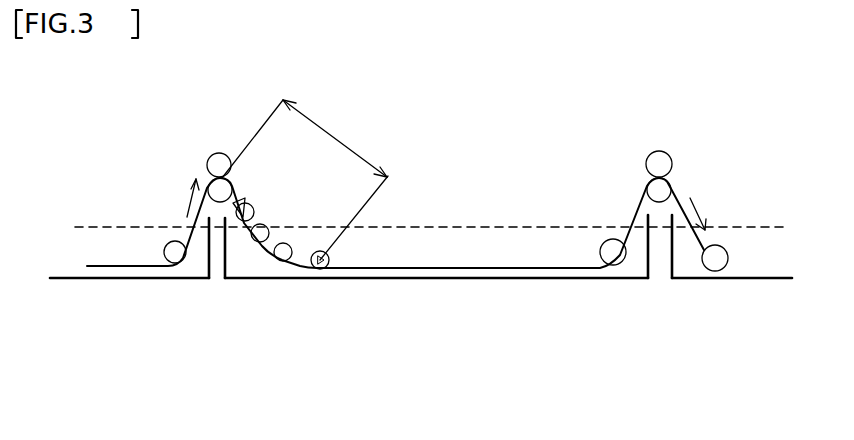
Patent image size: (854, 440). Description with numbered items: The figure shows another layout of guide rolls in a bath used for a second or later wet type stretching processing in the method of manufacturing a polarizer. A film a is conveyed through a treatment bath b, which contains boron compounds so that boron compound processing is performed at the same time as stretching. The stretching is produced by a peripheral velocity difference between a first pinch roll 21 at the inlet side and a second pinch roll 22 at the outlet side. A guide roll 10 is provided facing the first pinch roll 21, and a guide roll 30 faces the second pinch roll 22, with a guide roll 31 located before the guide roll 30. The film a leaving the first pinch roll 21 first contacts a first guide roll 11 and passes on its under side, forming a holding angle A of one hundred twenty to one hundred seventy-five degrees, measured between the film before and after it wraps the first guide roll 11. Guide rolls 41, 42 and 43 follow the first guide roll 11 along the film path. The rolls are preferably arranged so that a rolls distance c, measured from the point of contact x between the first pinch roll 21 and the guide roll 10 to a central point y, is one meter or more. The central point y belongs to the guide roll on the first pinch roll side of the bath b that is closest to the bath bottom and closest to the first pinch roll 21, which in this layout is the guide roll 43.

The guide roll 10 is at (211, 280).
The first guide roll 11 is at (227, 281).
The first pinch roll 21 is at (227, 152).
The second pinch roll 22 is at (667, 152).
The guide roll 30 is at (650, 187).
The guide roll 31 is at (612, 262).
The guide roll 41 is at (251, 244).
The guide roll 42 is at (281, 263).
The guide roll 43 is at (332, 258).
The film a is at (192, 238).
The treatment bath b is at (511, 214).
The rolls distance c is at (305, 180).
The point of contact x is at (212, 159).
The central point y is at (325, 271).
The holding angle A is at (246, 208).